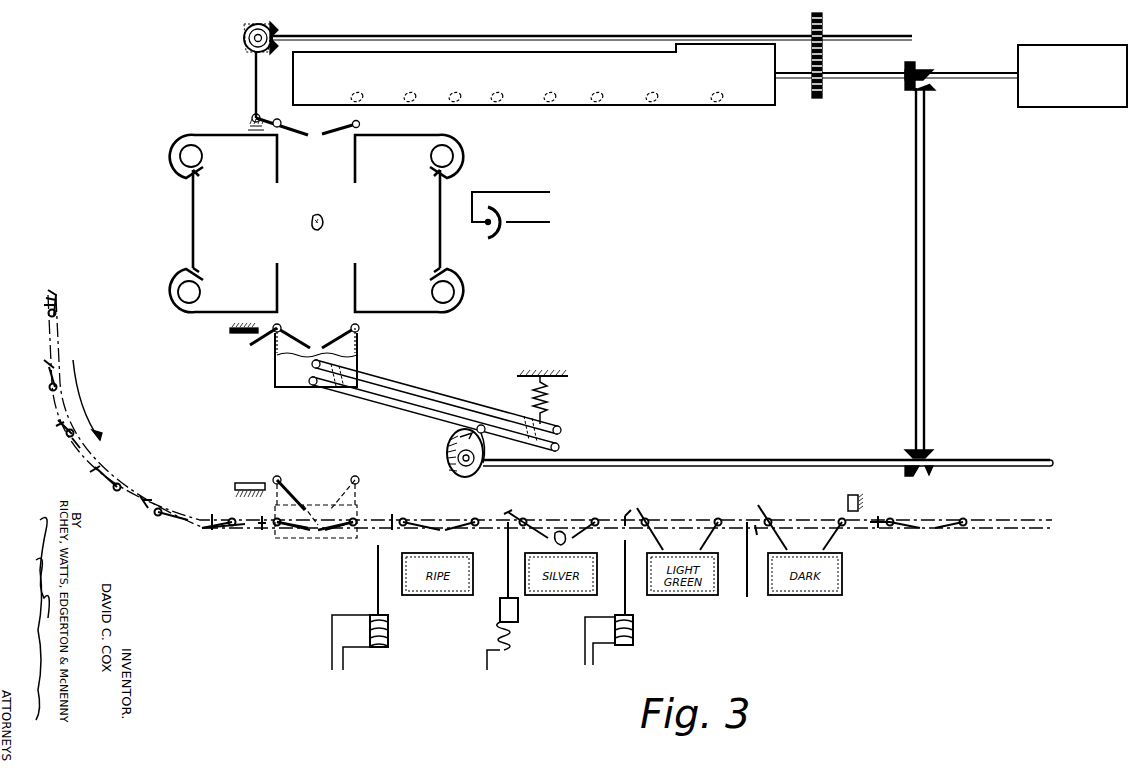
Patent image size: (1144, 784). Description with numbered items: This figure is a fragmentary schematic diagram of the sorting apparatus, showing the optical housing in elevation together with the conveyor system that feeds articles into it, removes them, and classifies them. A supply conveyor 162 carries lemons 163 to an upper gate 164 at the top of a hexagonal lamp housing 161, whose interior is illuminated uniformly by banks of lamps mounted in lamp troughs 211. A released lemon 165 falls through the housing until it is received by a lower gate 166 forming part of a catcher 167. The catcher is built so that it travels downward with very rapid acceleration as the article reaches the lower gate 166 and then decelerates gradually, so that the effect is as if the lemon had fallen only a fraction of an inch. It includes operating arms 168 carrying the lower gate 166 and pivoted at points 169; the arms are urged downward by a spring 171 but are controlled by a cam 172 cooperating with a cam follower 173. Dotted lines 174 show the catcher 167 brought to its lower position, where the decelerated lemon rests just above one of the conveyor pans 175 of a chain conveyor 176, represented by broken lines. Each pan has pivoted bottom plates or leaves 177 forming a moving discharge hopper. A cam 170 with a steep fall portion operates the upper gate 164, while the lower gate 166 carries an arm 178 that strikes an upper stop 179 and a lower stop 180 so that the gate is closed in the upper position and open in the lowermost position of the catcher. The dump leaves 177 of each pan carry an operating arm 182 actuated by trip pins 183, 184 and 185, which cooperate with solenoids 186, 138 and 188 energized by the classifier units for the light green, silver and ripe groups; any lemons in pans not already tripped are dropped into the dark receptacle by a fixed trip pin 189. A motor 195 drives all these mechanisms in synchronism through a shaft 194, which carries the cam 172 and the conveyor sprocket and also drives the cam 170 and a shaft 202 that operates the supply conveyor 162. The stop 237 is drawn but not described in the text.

The solenoid 138 is at (518, 630).
The lamp housing 161 is at (190, 198).
The conveyor 162 is at (626, 105).
The lemons 163 is at (598, 93).
The upper gate 164 is at (332, 138).
The lemon 165 is at (324, 222).
The lower gate 166 is at (322, 341).
The catcher 167 is at (433, 404).
The operating arms 168 is at (390, 386).
The pivot points 169 is at (562, 430).
The cam 170 is at (245, 36).
The spring 171 is at (546, 398).
The cam 172 is at (447, 455).
The cam follower 173 is at (486, 434).
The dotted lines 174 is at (304, 503).
The conveyor pans 175 is at (302, 533).
The chain conveyor 176 is at (244, 531).
The bottom plates or leaves 177 is at (330, 534).
The arm 178 is at (252, 346).
The upper stop 179 is at (236, 336).
The lower stop 180 is at (240, 482).
The operating arm 182 is at (266, 531).
The trip pin 183 is at (376, 560).
The trip pin 184 is at (508, 560).
The trip pin 185 is at (624, 548).
The solenoid 186 is at (388, 640).
The solenoid 188 is at (634, 642).
The fixed trip pin 189 is at (747, 597).
The shaft 194 is at (760, 461).
The motor 195 is at (1066, 108).
The shaft 202 is at (802, 80).
The lamp troughs 211 is at (190, 134).
The stop 237 is at (880, 517).